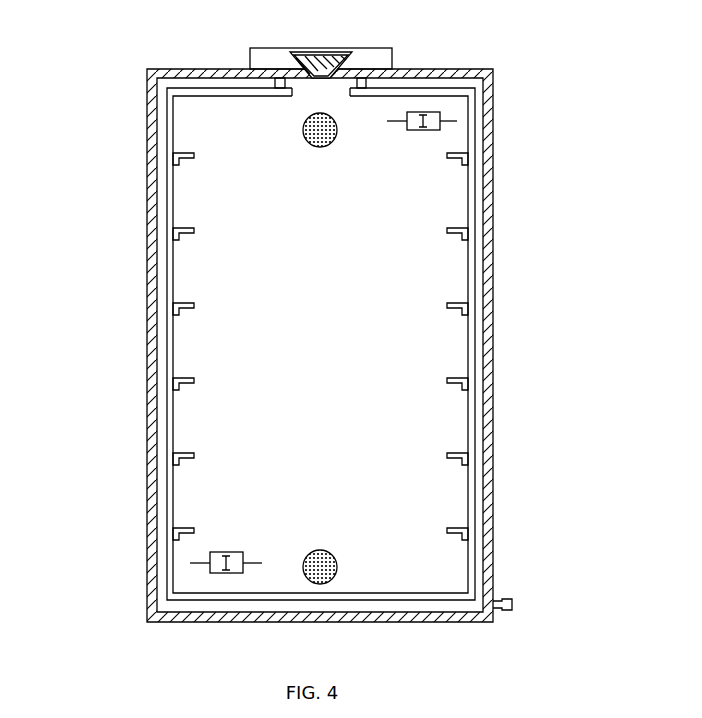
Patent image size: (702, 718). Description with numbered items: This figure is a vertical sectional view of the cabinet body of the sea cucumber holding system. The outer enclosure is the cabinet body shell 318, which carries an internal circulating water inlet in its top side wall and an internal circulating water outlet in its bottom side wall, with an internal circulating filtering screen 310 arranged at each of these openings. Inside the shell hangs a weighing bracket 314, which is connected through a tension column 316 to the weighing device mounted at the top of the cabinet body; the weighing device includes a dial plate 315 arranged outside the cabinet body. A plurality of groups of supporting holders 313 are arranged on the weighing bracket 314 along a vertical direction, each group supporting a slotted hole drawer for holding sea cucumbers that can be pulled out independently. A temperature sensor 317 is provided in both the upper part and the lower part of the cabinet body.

The internal circulating filtering screen 310 is at (315, 147).
The supporting holder 313 is at (184, 300).
The weighing bracket 314 is at (173, 195).
The dial plate 315 is at (307, 62).
The tension column 316 is at (363, 83).
The temperature sensor 317 is at (440, 118).
The cabinet body shell 318 is at (148, 378).